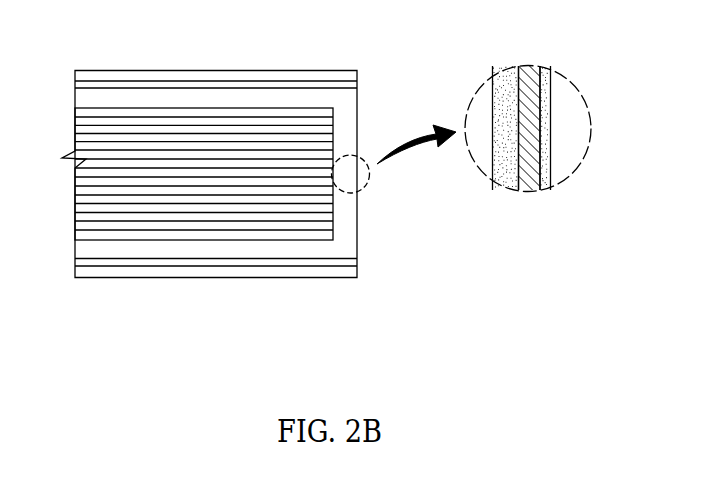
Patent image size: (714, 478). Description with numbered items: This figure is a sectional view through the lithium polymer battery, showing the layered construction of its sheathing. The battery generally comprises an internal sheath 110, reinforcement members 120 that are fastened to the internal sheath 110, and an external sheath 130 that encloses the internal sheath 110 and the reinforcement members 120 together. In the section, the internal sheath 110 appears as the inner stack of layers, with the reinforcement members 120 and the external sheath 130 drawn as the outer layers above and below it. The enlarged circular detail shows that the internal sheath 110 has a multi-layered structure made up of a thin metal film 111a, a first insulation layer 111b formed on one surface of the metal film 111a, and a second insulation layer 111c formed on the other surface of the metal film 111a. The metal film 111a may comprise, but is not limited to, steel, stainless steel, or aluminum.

The internal sheath 110 is at (375, 110).
The reinforcement member 120 is at (309, 88).
The external sheath 130 is at (262, 78).
The metal film 111a is at (531, 186).
The first insulation layer 111b is at (543, 186).
The second insulation layer 111c is at (502, 186).